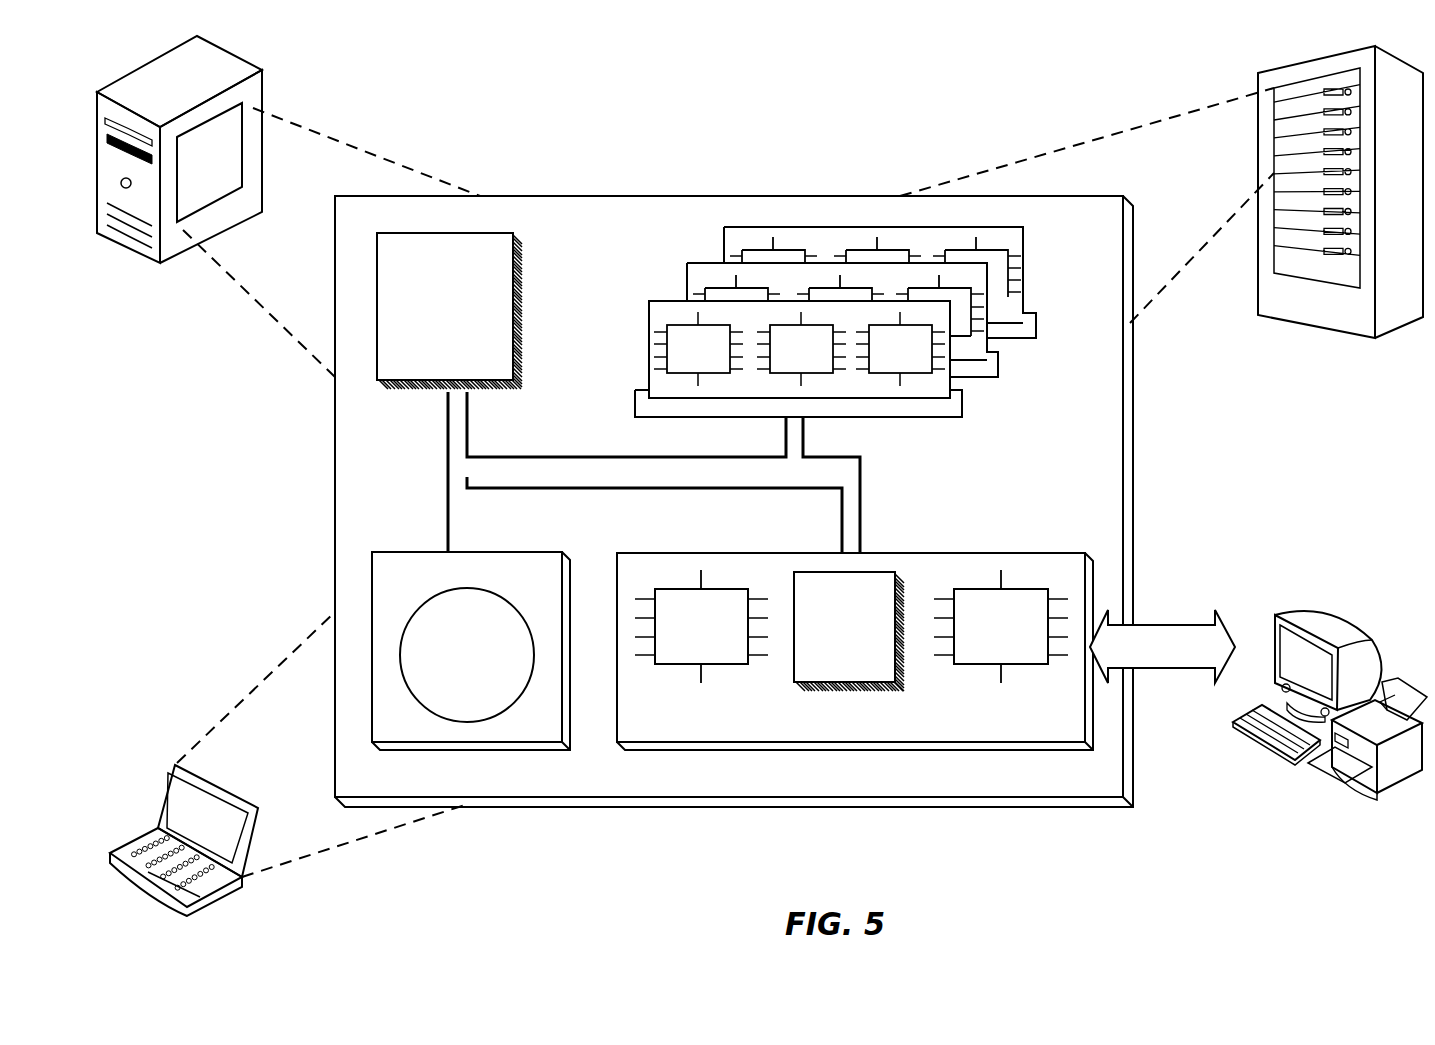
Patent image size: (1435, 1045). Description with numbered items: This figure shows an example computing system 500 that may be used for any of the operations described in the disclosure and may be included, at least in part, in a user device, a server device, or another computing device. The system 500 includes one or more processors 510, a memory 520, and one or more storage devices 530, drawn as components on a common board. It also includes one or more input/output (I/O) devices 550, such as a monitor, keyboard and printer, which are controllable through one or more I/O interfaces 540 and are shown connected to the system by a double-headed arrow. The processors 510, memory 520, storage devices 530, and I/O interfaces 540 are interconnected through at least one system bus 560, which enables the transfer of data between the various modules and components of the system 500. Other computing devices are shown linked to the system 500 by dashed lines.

The computing system 500 is at (549, 115).
The processor 510 is at (502, 369).
The memory 520 is at (1030, 377).
The storage device 530 is at (551, 731).
The I/O interface 540 is at (970, 731).
The input/output device 550 is at (1277, 622).
The system bus 560 is at (650, 477).